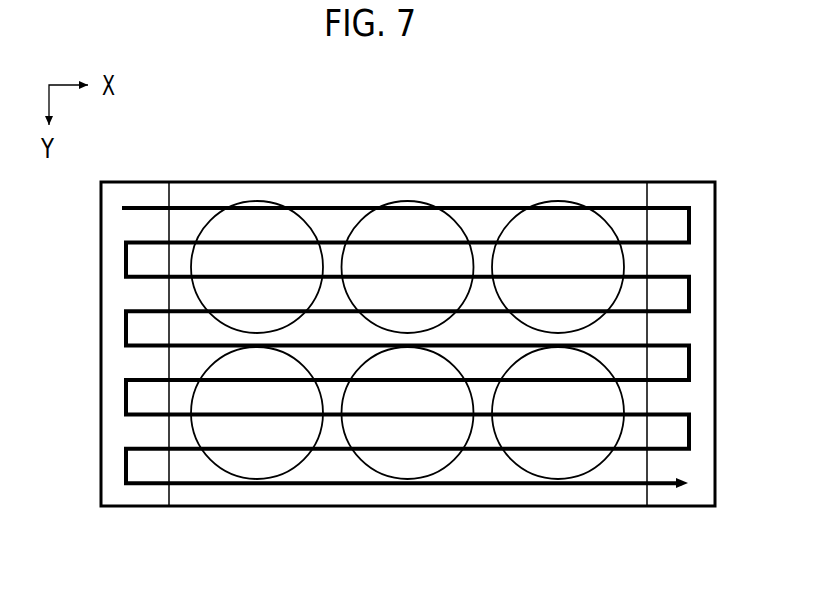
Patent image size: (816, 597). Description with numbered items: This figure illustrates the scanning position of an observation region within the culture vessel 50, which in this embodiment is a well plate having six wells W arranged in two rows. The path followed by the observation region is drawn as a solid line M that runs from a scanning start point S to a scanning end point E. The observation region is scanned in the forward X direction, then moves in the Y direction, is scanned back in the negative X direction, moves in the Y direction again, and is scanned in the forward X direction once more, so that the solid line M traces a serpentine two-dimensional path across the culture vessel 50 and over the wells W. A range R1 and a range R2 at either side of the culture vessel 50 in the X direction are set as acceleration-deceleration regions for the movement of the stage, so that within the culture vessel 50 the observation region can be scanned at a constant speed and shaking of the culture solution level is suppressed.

The culture vessel 50 is at (205, 507).
The solid line M is at (193, 206).
The scanning start point S is at (127, 207).
The scanning end point E is at (688, 483).
The well W is at (379, 183).
The range R1 is at (170, 510).
The range R2 is at (715, 510).